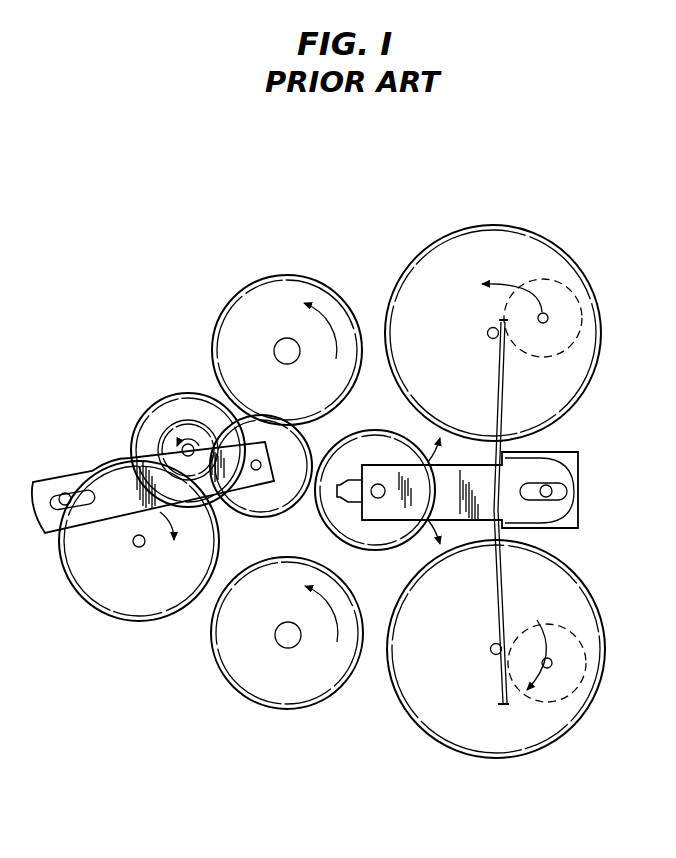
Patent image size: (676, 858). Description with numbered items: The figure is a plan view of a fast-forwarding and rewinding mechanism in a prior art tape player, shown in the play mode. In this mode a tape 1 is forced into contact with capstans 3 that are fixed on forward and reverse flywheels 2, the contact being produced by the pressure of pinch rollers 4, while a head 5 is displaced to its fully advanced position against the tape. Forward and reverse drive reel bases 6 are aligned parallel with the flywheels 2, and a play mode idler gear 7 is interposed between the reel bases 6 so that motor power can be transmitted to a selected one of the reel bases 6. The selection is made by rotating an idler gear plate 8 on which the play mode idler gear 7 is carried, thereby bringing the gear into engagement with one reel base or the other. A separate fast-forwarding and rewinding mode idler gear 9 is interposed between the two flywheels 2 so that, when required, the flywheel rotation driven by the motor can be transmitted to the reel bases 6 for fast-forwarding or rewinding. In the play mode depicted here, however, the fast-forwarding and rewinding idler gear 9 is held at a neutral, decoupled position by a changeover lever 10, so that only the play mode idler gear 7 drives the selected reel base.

The tape 1 is at (497, 395).
The flywheels 2 is at (460, 242).
The capstans 3 is at (486, 333).
The pinch rollers 4 is at (548, 306).
The head 5 is at (578, 463).
The reel bases 6 is at (273, 292).
The play mode idler gear 7 is at (282, 495).
The idler gear plate 8 is at (108, 478).
The fast-forwarding and rewinding mode idler gear 9 is at (372, 437).
The changeover lever 10 is at (472, 472).